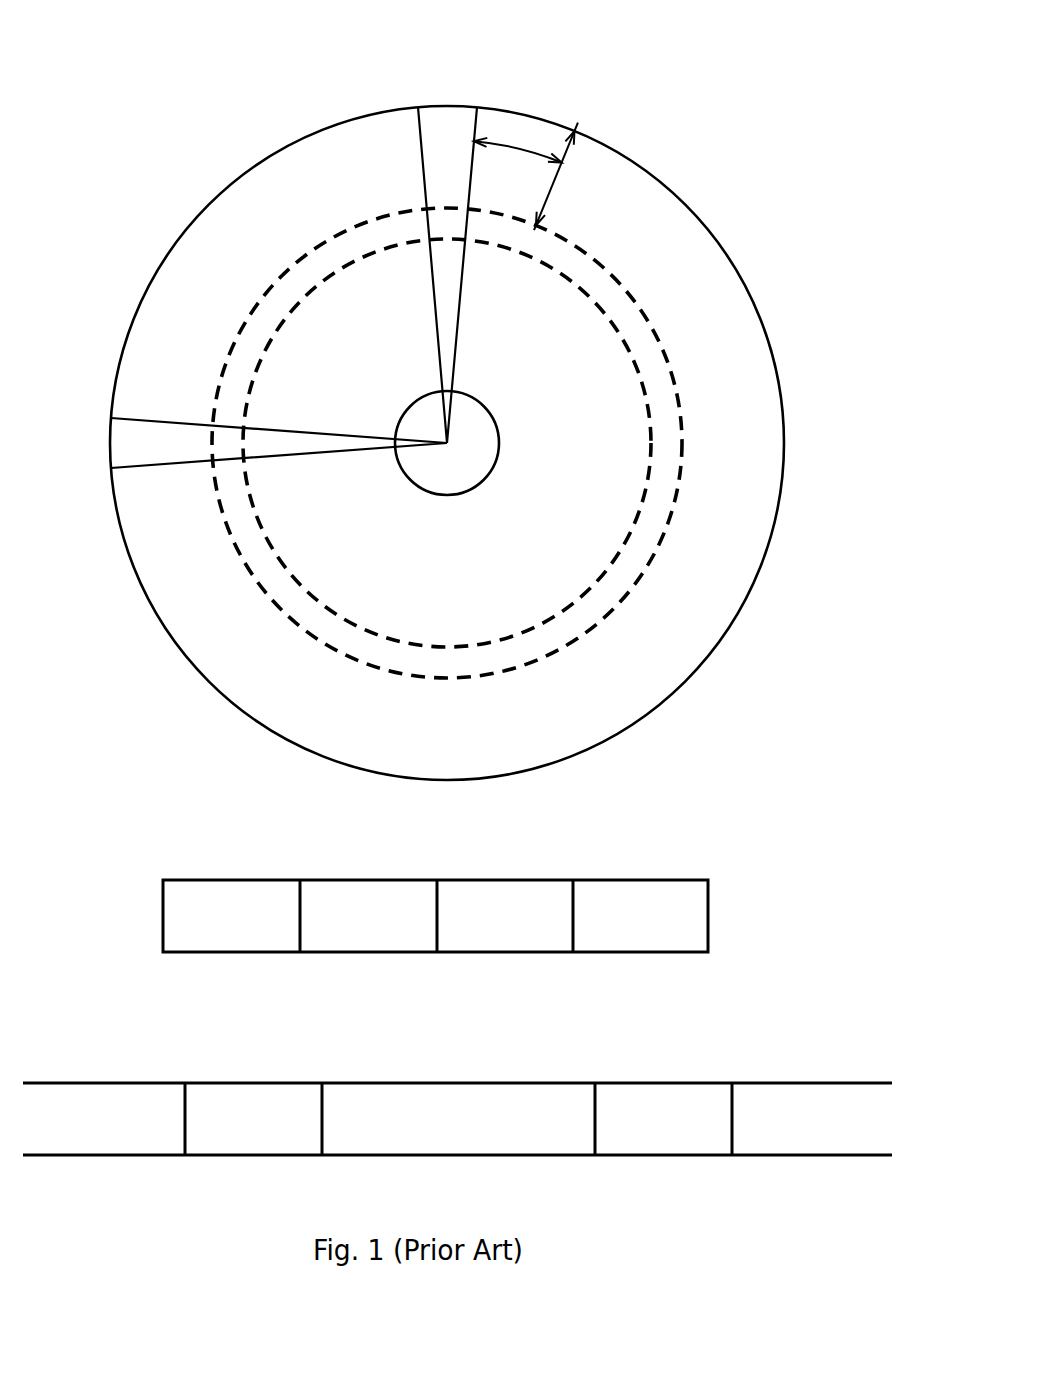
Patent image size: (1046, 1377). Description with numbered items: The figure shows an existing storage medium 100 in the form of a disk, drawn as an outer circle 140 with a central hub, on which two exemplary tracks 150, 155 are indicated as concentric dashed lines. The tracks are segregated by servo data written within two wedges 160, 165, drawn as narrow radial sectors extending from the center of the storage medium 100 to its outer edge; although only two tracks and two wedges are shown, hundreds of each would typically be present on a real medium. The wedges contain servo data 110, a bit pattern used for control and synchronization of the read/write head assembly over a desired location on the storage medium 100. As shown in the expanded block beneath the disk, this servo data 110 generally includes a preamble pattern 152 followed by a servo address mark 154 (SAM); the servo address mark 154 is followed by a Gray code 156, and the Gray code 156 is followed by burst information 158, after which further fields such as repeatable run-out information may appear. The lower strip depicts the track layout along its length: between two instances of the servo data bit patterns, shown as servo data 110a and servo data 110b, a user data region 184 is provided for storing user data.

The storage medium 100 is at (120, 70).
The servo data 110 is at (559, 853).
The servo data 110a is at (230, 1147).
The servo data 110b is at (640, 1147).
The disk 140 is at (680, 197).
The track 150 is at (600, 263).
The track 155 is at (612, 320).
The wedge 160 is at (447, 112).
The wedge 165 is at (118, 447).
The preamble pattern 152 is at (213, 944).
The servo address mark 154 is at (349, 944).
The Gray code 156 is at (486, 944).
The burst information 158 is at (623, 944).
The user data region 184 is at (439, 1147).